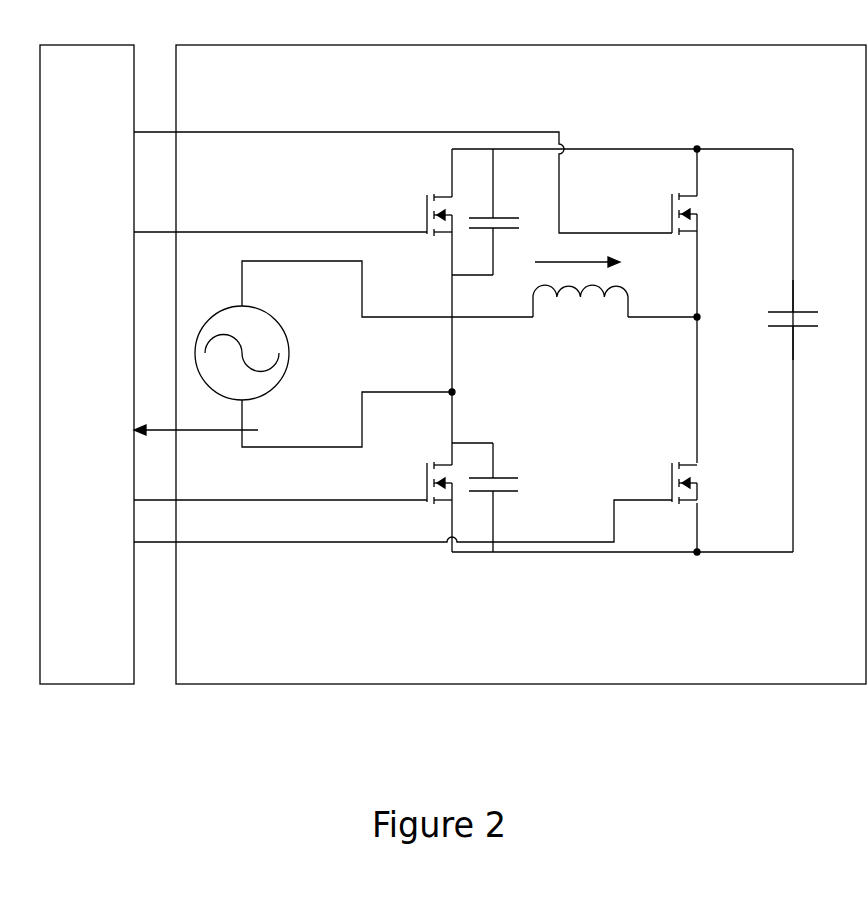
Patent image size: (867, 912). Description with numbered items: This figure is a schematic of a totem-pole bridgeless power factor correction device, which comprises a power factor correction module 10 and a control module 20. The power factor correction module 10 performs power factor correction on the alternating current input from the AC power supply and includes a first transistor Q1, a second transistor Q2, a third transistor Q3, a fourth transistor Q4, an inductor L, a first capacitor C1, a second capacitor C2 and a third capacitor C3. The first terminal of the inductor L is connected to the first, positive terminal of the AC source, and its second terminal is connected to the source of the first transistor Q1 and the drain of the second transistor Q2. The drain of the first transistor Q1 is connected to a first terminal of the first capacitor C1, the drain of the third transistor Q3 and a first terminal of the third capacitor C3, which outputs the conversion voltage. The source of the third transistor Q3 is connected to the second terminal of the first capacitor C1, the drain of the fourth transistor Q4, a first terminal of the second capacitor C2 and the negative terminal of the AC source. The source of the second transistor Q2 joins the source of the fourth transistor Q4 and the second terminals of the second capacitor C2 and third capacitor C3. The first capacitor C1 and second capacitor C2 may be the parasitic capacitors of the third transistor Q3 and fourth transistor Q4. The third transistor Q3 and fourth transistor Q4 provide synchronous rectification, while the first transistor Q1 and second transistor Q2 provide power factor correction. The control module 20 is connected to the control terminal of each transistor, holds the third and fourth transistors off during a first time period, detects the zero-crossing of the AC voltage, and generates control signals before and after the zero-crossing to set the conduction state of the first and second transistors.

The power factor correction module 10 is at (500, 347).
The control module 20 is at (115, 63).
The first transistor Q1 is at (678, 196).
The second transistor Q2 is at (676, 499).
The third transistor Q3 is at (432, 201).
The fourth transistor Q4 is at (428, 500).
The first capacitor C1 is at (505, 212).
The second capacitor C2 is at (504, 497).
The third capacitor C3 is at (784, 320).
The inductor L is at (580, 305).